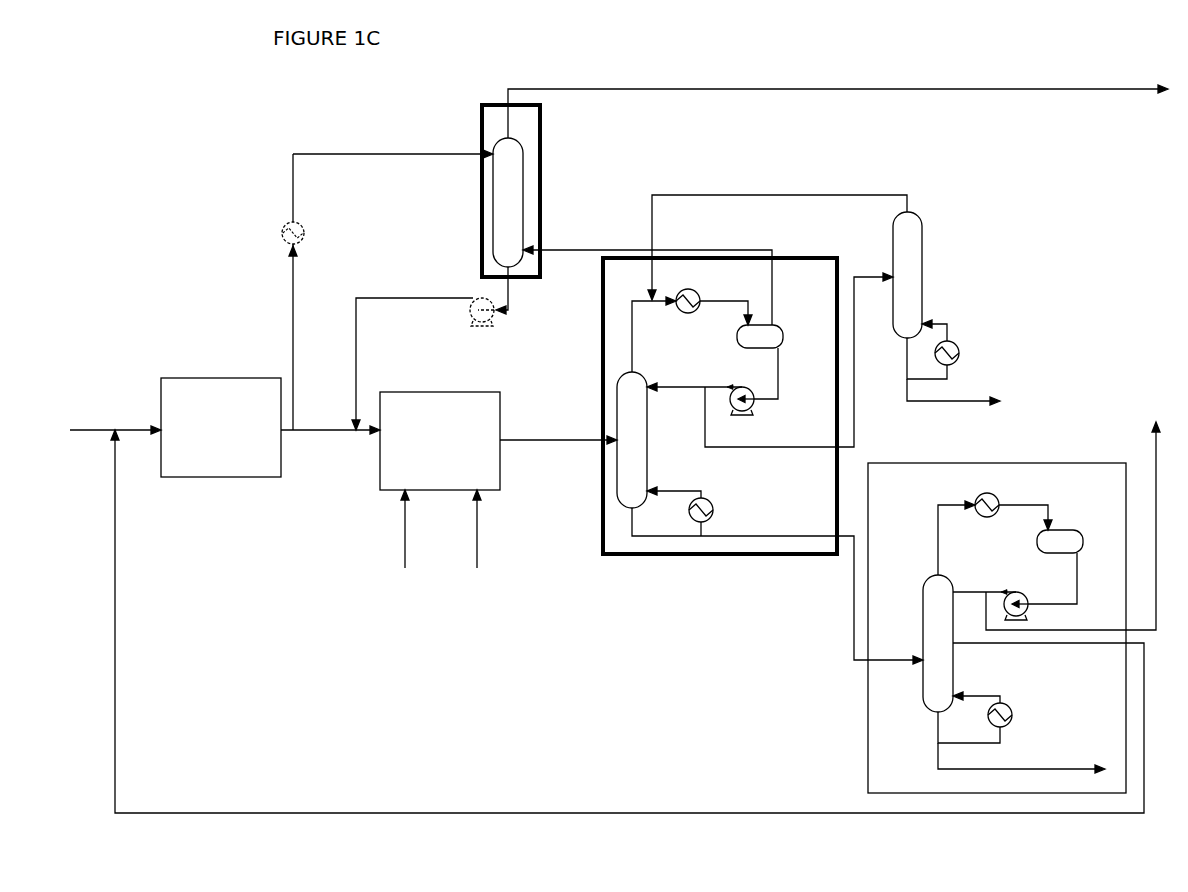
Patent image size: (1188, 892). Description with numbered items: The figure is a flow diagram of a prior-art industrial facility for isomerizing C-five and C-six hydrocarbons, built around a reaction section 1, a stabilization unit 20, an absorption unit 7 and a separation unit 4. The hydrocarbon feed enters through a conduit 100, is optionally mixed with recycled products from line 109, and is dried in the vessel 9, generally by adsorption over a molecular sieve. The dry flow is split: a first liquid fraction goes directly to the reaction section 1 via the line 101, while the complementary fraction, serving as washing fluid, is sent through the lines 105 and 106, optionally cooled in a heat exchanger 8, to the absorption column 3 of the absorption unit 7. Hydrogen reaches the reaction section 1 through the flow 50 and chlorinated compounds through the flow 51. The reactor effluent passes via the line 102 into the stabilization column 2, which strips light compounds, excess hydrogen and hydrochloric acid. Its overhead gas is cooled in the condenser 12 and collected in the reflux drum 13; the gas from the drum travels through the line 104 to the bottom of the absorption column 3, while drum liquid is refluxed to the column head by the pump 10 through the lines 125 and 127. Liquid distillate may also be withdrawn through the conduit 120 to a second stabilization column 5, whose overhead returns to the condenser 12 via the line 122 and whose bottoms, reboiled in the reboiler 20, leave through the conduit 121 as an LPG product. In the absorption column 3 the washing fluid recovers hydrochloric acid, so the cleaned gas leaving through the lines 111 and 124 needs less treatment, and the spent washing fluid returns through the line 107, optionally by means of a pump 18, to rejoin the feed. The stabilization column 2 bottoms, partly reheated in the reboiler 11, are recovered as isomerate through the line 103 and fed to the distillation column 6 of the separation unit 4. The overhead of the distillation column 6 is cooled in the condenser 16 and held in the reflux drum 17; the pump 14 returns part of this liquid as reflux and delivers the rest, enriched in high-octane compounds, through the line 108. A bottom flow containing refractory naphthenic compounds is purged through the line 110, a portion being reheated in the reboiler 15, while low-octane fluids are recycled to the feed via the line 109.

The reaction section 1 is at (432, 392).
The stabilization column 2 is at (617, 467).
The absorption column 3 is at (493, 238).
The separation unit 4 is at (868, 703).
The second stabilization column 5 is at (922, 237).
The distillation column 6 is at (923, 712).
The absorption unit 7 is at (482, 112).
The heat exchanger 8 is at (283, 229).
The vessel 9 is at (208, 378).
The pump 10 is at (744, 413).
The reboiler 11 is at (712, 502).
The condenser 12 is at (696, 291).
The reflux drum 13 is at (783, 336).
The pump 14 is at (1026, 613).
The reboiler 15 is at (1008, 712).
The condenser 16 is at (995, 495).
The reflux drum 17 is at (1083, 548).
The pump 18 is at (484, 322).
The stabilization unit 20 is at (603, 547).
The flow 50 is at (420, 529).
The flow 51 is at (492, 529).
The conduit 100 is at (115, 419).
The line 101 is at (330, 420).
The line 102 is at (558, 431).
The line 103 is at (777, 586).
The line 104 is at (647, 277).
The line 105 is at (311, 292).
The line 106 is at (393, 146).
The line 107 is at (412, 354).
The line 108 is at (1073, 526).
The line 109 is at (627, 623).
The line 110 is at (1021, 758).
The line 111 is at (704, 101).
The conduit 120 is at (799, 351).
The conduit 121 is at (953, 392).
The line 122 is at (777, 237).
The line 124 is at (1034, 78).
The line 125 is at (786, 374).
The line 127 is at (694, 398).